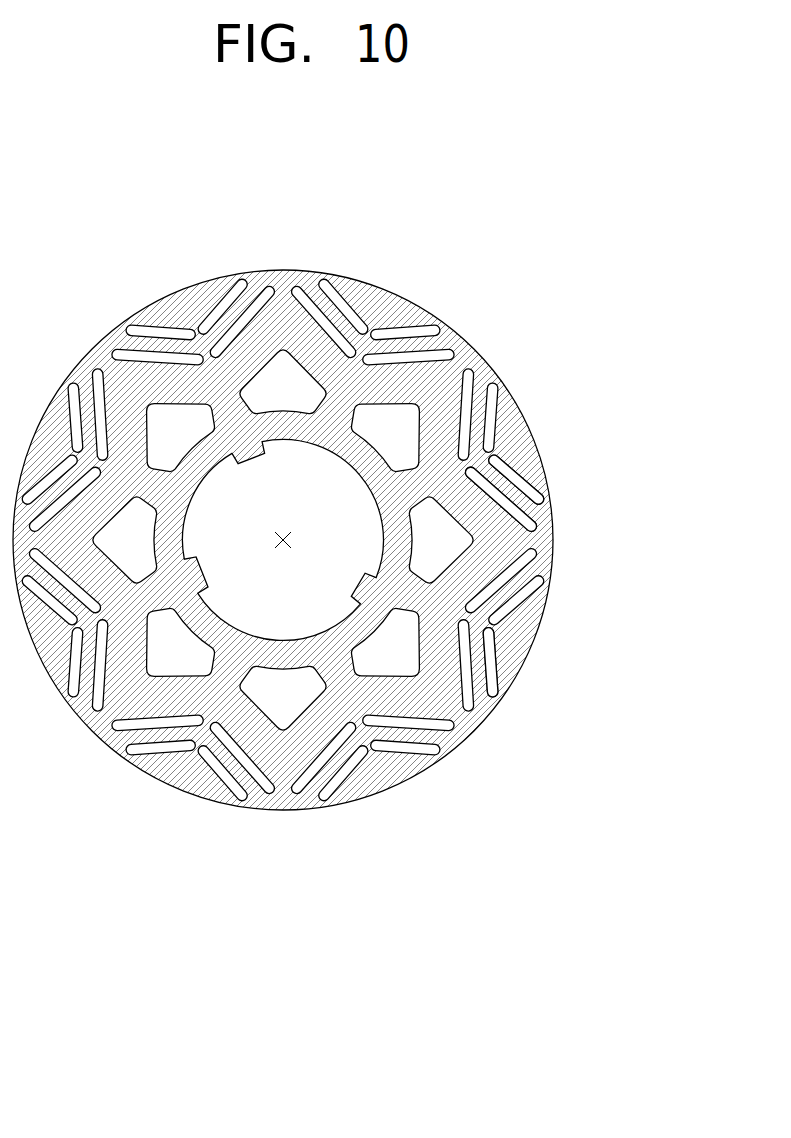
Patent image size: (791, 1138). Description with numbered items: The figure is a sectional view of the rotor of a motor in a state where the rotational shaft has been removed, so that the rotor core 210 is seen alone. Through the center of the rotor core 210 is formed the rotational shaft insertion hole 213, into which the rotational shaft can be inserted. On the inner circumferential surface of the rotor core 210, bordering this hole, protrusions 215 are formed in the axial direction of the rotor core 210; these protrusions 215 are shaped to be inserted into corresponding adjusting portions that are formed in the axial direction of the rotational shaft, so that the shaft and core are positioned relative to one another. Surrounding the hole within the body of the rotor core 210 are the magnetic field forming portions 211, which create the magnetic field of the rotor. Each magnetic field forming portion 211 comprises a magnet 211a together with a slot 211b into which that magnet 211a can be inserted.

The rotor core 210 is at (438, 597).
The magnetic field forming portion 211 is at (590, 402).
The magnet 211a is at (514, 470).
The slot 211b is at (535, 514).
The rotational shaft insertion hole 213 is at (283, 540).
The protrusions 215 is at (195, 580).